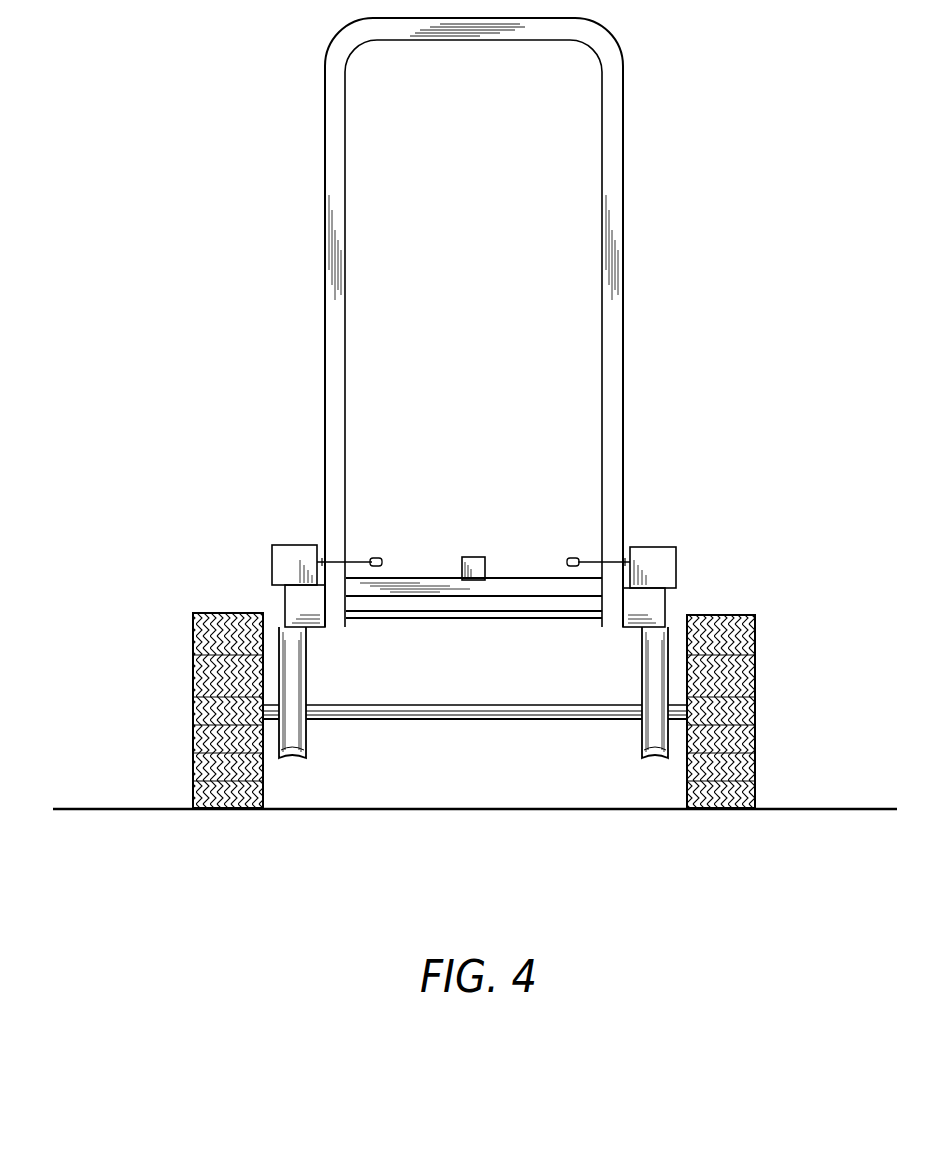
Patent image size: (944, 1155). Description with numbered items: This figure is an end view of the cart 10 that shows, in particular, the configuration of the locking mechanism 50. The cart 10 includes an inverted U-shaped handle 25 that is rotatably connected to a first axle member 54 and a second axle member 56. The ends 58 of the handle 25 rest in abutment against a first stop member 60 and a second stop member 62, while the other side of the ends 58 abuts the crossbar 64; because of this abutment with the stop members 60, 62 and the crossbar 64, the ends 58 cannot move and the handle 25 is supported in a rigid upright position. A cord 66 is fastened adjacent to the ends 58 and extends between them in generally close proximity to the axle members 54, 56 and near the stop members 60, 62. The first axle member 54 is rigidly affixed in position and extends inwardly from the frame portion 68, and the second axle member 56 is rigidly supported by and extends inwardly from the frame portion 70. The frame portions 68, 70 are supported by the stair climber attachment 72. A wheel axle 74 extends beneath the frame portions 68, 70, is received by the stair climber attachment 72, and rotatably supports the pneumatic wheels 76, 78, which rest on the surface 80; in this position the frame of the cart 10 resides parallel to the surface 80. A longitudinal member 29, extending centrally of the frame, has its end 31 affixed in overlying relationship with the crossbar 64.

The cart 10 is at (645, 300).
The inverted U-shaped handle 25 is at (327, 263).
The longitudinal member 29 is at (482, 558).
The end 31 is at (488, 567).
The locking mechanism 50 is at (703, 562).
The first axle member 54 is at (373, 558).
The second axle member 56 is at (577, 558).
The ends 58 is at (333, 627).
The first stop member 60 is at (652, 607).
The second stop member 62 is at (290, 607).
The crossbar 64 is at (398, 588).
The cord 66 is at (512, 620).
The frame portion 68 is at (287, 552).
The frame portion 70 is at (663, 552).
The stair climber attachment 72 is at (307, 745).
The wheel axle 74 is at (513, 720).
The pneumatic wheel 76 is at (748, 680).
The pneumatic wheel 78 is at (197, 682).
The surface 80 is at (150, 806).